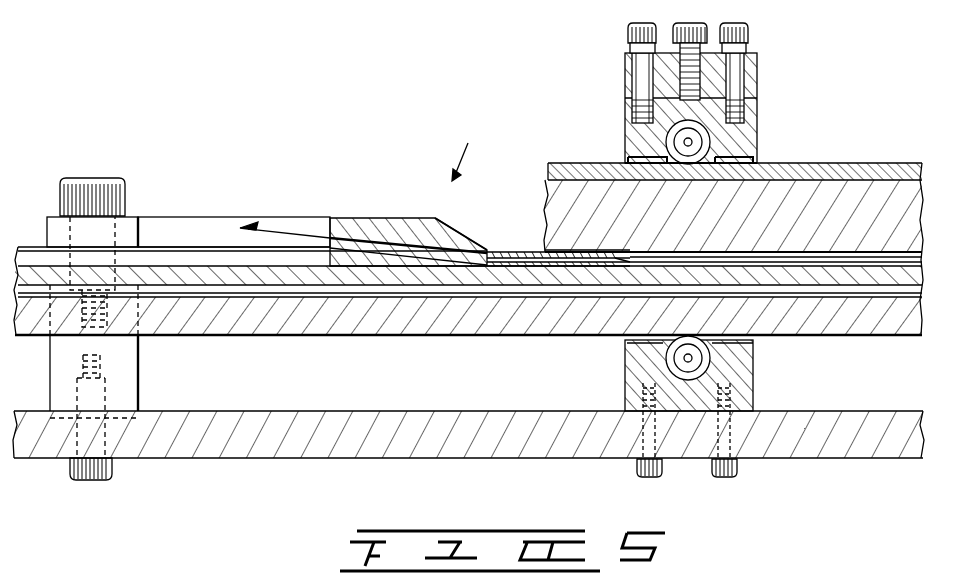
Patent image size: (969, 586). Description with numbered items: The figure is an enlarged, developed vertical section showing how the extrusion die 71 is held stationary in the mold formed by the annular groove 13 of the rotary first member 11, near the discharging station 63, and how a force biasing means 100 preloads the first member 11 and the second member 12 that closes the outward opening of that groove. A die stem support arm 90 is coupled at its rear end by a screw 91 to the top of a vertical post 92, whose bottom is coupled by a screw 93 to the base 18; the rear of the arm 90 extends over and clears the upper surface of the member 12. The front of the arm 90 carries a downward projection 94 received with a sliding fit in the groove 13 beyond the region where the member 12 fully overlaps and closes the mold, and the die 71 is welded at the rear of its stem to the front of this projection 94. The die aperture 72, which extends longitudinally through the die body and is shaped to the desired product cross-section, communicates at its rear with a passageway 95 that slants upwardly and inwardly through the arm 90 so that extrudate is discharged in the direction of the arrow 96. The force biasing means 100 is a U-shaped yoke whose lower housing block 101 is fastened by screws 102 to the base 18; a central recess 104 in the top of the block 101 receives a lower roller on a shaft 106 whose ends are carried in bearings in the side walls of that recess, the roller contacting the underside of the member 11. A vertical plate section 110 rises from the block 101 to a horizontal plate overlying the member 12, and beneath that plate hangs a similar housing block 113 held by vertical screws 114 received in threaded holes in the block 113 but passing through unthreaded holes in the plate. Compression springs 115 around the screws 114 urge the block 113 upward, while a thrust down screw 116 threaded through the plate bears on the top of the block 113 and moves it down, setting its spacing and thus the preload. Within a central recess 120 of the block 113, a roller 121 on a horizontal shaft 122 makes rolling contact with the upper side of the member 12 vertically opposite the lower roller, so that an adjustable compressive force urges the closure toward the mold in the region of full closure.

The first member 11 is at (180, 266).
The second member 12 is at (842, 166).
The annular groove 13 is at (765, 257).
The base 18 is at (205, 458).
The discharging station 63 is at (467, 152).
The extrusion die 71 is at (590, 250).
The die aperture 72 is at (525, 250).
The die stem support arm 90 is at (158, 228).
The screw 91 is at (66, 195).
The vertical post 92 is at (138, 373).
The screw 93 is at (112, 468).
The downward projection 94 is at (326, 262).
The passageway 95 is at (435, 218).
The arrow 96 is at (288, 232).
The force biasing means 100 is at (708, 93).
The housing block 101 is at (709, 429).
The screws 102 is at (712, 470).
The central recess 104 is at (752, 344).
The shaft 106 is at (682, 365).
The vertical plate section 110 is at (757, 162).
The housing block 113 is at (757, 122).
The vertical screws 114 is at (640, 78).
The compression springs 115 is at (630, 52).
The thrust down screw 116 is at (700, 72).
The central recess 120 is at (633, 158).
The roller 121 is at (625, 133).
The horizontal shaft 122 is at (680, 140).